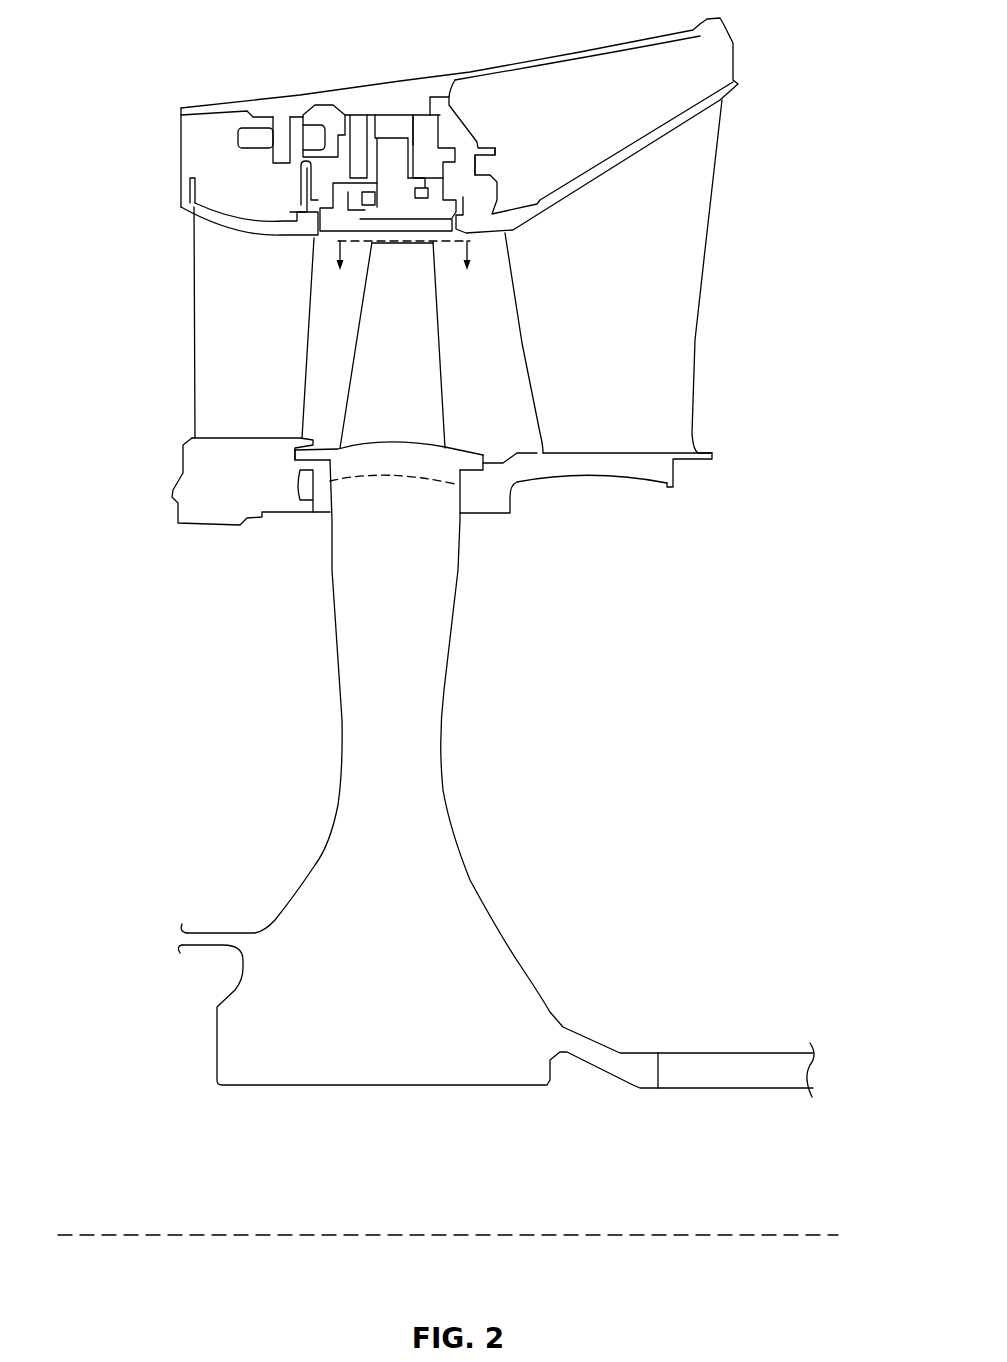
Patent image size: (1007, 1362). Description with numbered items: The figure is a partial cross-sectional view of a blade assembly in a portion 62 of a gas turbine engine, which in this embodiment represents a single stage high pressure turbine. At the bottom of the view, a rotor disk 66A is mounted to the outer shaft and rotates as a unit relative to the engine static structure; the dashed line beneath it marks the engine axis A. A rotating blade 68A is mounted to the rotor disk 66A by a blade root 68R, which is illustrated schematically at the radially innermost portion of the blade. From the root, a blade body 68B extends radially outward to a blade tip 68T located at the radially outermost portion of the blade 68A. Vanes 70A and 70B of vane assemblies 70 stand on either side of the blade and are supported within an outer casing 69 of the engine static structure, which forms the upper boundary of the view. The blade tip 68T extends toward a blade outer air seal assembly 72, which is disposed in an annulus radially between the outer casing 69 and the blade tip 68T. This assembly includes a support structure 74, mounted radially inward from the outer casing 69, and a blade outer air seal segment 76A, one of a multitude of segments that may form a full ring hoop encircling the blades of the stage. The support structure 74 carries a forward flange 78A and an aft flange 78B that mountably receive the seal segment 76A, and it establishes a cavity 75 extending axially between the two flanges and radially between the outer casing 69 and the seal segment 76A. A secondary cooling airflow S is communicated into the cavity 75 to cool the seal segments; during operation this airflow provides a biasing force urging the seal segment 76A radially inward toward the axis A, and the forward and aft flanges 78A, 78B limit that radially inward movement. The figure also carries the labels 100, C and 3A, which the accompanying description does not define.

The portion of a gas turbine engine 62 is at (647, 306).
The rotor disk 66A is at (512, 935).
The blade 68A is at (500, 526).
The blade body 68B is at (392, 224).
The blade root 68R is at (386, 487).
The blade tip 68T is at (403, 245).
The outer casing 69 is at (420, 95).
The vane assemblies 70 is at (162, 497).
The vane 70A is at (262, 333).
The vane 70B is at (580, 367).
The blade outer air seal assembly 72 is at (354, 221).
The support structure 74 is at (458, 157).
The cavity 75 is at (322, 257).
The blade outer air seal segment 76A is at (298, 198).
The forward flange 78A is at (345, 237).
The aft flange 78B is at (460, 205).
The seal assembly 100 is at (368, 148).
The secondary cooling airflow S is at (388, 233).
The chord C is at (320, 388).
The axis A is at (703, 1237).
The section line 3A is at (404, 276).